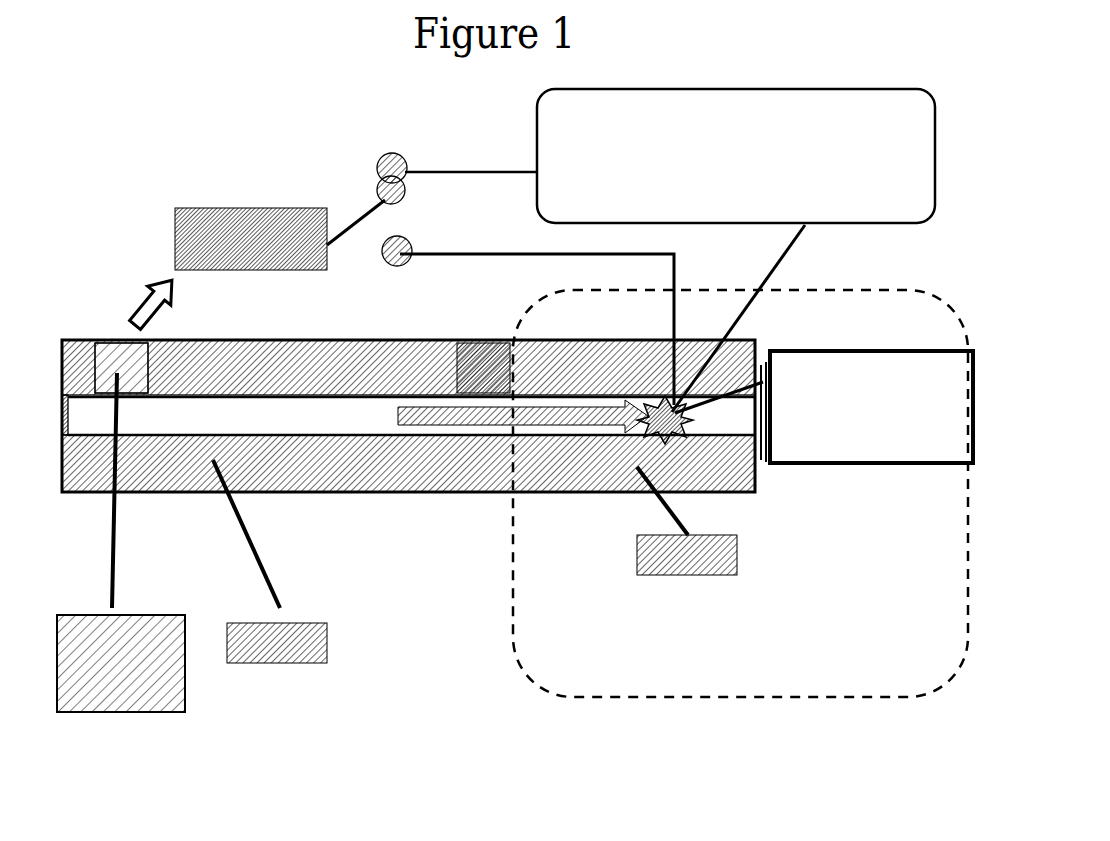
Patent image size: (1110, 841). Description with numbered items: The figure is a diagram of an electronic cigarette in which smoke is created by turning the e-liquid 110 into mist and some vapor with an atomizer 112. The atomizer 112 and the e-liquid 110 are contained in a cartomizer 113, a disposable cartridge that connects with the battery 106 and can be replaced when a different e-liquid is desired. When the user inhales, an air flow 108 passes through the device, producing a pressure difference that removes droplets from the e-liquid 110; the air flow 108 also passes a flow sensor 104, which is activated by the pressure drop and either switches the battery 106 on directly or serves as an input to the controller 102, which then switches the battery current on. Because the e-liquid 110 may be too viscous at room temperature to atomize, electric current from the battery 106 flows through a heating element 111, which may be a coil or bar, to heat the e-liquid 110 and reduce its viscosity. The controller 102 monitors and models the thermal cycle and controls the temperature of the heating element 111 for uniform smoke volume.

The controller 102 is at (174, 249).
The flow sensor 104 is at (75, 712).
The battery 106 is at (275, 663).
The air flow 108 is at (343, 442).
The e-liquid 110 is at (637, 545).
The heating element 111 is at (672, 440).
The atomizer 112 is at (900, 463).
The cartomizer 113 is at (660, 697).